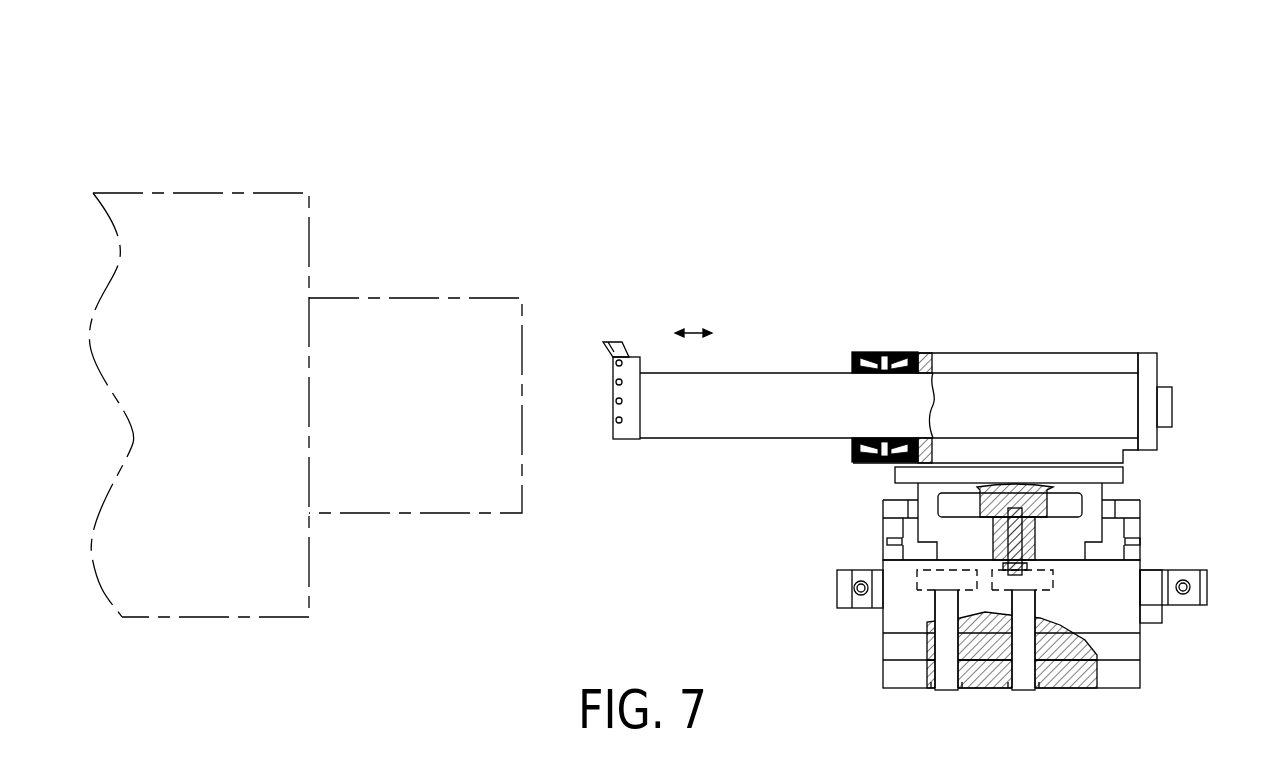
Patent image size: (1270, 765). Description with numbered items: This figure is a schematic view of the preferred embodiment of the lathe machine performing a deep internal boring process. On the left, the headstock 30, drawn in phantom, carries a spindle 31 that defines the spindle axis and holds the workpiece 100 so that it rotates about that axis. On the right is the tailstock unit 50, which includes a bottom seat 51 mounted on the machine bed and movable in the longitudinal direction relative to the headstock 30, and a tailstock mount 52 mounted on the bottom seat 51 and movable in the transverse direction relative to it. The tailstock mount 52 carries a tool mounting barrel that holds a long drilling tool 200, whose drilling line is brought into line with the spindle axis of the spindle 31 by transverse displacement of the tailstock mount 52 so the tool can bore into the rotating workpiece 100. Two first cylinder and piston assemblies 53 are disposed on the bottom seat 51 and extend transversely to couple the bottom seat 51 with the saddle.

The headstock 30 is at (205, 180).
The spindle 31 is at (275, 218).
The workpiece 100 is at (405, 312).
The drilling tool 200 is at (737, 417).
The tailstock unit 50 is at (1018, 340).
The bottom seat 51 is at (1115, 620).
The tailstock mount 52 is at (975, 358).
The first cylinder and piston assemblies 53 is at (862, 602).